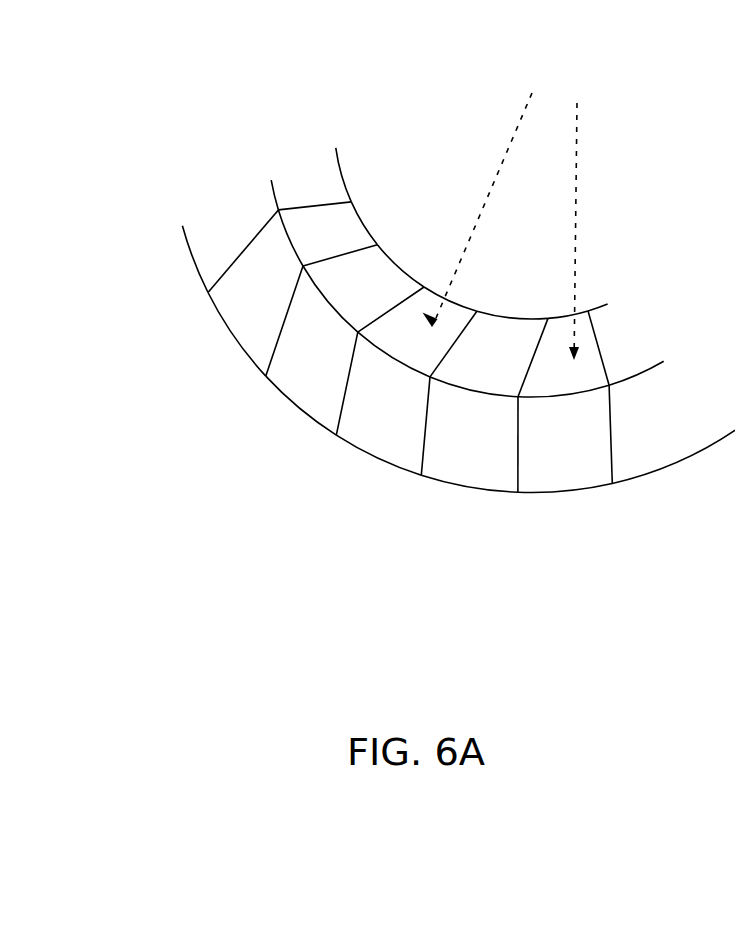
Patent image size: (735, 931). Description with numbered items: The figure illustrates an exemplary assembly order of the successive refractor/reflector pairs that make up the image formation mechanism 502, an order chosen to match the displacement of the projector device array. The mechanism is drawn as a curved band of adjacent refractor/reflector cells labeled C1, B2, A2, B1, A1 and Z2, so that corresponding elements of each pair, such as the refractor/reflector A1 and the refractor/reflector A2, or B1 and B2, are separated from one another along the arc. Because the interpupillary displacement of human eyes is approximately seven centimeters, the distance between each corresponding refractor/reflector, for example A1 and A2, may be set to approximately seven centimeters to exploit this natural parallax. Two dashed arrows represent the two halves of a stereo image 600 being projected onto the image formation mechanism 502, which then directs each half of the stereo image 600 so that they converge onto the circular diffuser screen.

The image formation mechanism 502 is at (436, 320).
The stereo image 600 is at (492, 185).
The refractor/reflector C1 is at (255, 293).
The refractor/reflector B2 is at (312, 350).
The refractor/reflector A2 is at (383, 403).
The refractor/reflector B1 is at (469, 434).
The refractor/reflector A1 is at (565, 438).
The refractor/reflector Z2 is at (672, 422).